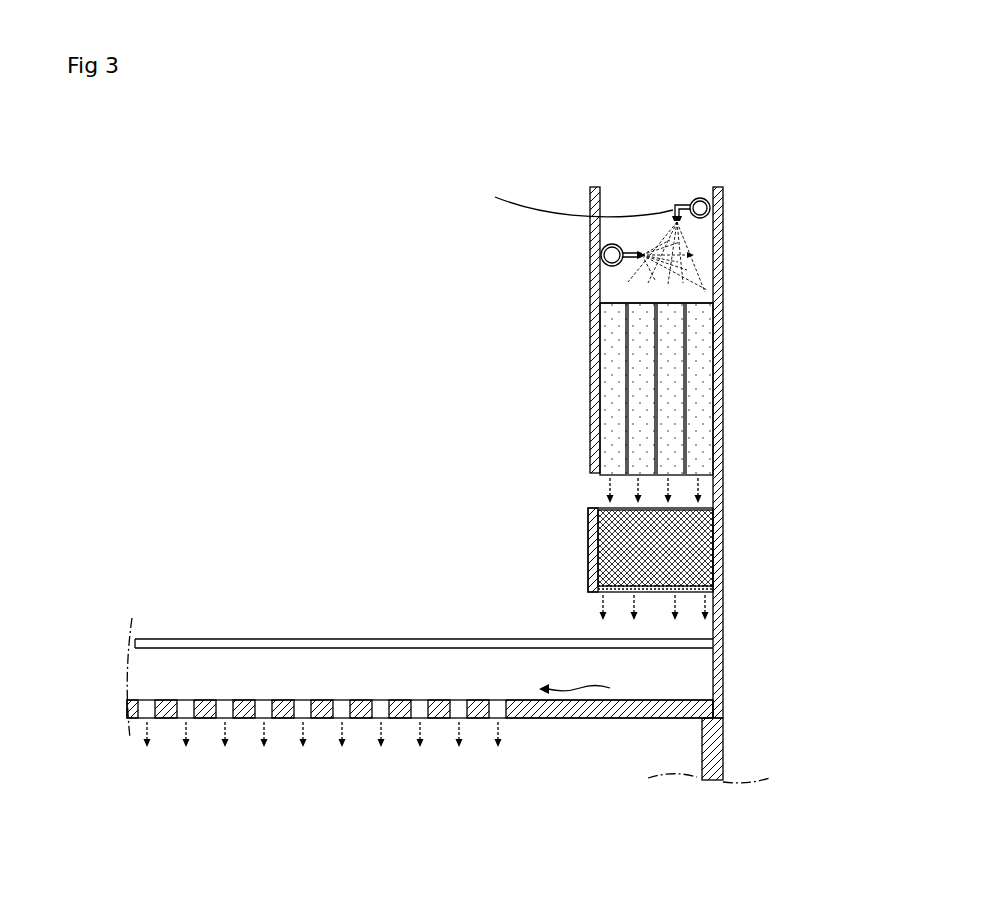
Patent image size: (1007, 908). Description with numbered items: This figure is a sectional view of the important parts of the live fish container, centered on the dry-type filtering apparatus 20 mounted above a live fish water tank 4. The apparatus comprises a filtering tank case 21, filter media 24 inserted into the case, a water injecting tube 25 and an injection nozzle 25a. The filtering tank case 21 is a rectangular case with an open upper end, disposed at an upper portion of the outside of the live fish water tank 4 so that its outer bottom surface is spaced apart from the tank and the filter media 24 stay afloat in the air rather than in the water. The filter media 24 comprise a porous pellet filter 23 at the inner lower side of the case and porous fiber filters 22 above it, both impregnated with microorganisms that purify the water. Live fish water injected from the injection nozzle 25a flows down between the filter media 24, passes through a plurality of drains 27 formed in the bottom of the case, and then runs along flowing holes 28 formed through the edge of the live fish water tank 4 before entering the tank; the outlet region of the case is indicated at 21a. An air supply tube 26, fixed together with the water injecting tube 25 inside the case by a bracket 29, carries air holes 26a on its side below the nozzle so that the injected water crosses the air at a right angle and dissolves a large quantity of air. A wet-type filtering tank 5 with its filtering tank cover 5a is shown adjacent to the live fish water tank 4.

The live fish water tank 4 is at (715, 746).
The wet-type filtering tank 5 is at (256, 670).
The filtering tank cover 5a is at (142, 646).
The dry-type filtering apparatus 20 is at (410, 306).
The filtering tank case 21 is at (716, 187).
The air outlet opening 21a is at (572, 683).
The porous fiber filter 22 is at (667, 425).
The porous pellet filter 23 is at (713, 575).
The filter media 24 is at (818, 507).
The water injecting tube 25 is at (697, 220).
The injection nozzle 25a is at (571, 199).
The air supply tube 26 is at (601, 249).
The air hole 26a is at (623, 277).
The drain 27 is at (684, 592).
The flowing hole 28 is at (227, 712).
The bracket 29 is at (601, 252).